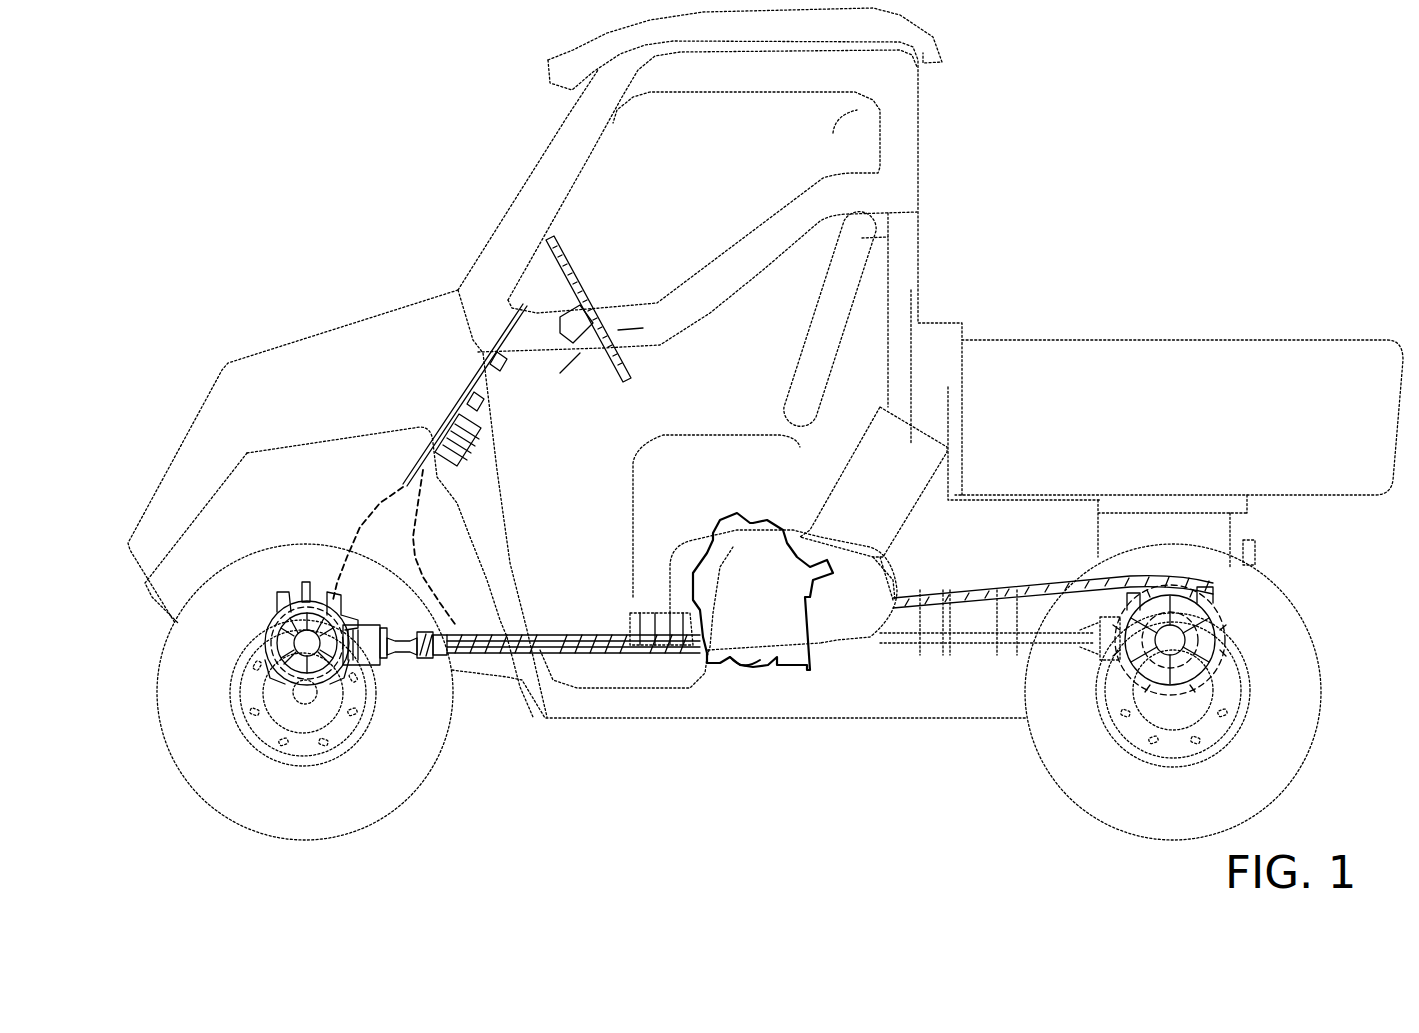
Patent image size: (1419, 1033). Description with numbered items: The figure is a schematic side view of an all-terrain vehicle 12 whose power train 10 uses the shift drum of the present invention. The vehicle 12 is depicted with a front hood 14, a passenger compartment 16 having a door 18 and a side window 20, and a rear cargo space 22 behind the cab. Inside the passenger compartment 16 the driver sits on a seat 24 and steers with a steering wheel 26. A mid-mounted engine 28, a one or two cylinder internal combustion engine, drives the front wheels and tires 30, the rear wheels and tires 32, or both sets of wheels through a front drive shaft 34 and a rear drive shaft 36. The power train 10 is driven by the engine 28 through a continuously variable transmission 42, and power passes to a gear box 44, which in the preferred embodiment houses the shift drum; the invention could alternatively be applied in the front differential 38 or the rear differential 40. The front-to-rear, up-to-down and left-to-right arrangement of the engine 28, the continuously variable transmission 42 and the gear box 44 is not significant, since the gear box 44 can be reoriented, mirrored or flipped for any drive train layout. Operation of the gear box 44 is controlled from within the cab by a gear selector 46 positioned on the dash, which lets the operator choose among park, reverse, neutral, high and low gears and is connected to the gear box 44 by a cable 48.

The power train 10 is at (907, 697).
The all-terrain vehicle 12 is at (439, 199).
The front hood 14 is at (371, 333).
The passenger compartment 16 is at (596, 178).
The door 18 is at (875, 298).
The side window 20 is at (833, 133).
The rear cargo space 22 is at (1152, 387).
The seat 24 is at (862, 238).
The steering wheel 26 is at (573, 243).
The engine 28 is at (910, 443).
The front wheels and tires 30 is at (408, 742).
The rear wheels and tires 32 is at (1287, 693).
The front drive shaft 34 is at (545, 640).
The rear drive shaft 36 is at (990, 633).
The front differential 38 is at (377, 672).
The rear differential 40 is at (1213, 603).
The continuously variable transmission 42 is at (838, 617).
The gear box 44 is at (747, 660).
The gear selector 46 is at (513, 307).
The cable 48 is at (420, 530).